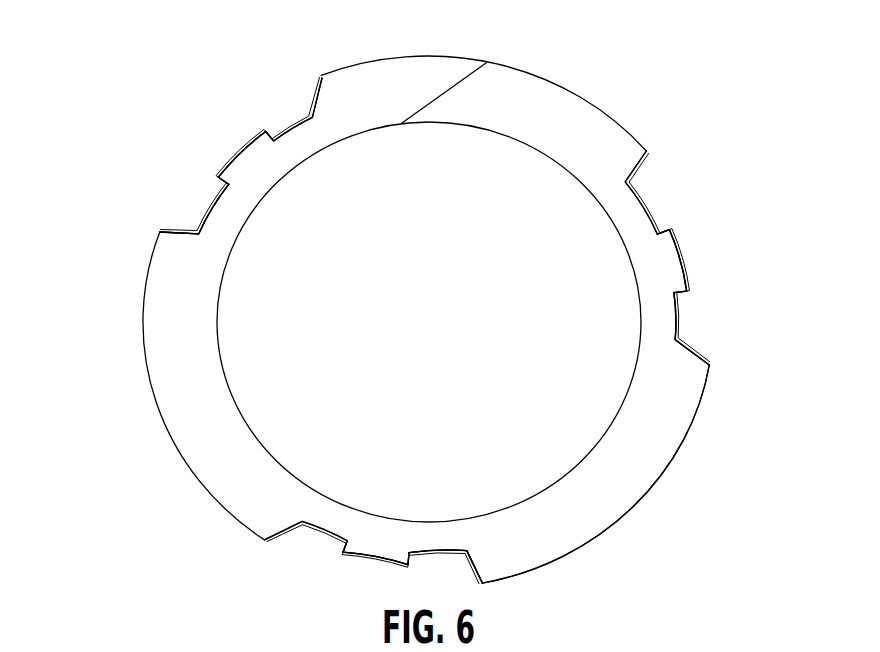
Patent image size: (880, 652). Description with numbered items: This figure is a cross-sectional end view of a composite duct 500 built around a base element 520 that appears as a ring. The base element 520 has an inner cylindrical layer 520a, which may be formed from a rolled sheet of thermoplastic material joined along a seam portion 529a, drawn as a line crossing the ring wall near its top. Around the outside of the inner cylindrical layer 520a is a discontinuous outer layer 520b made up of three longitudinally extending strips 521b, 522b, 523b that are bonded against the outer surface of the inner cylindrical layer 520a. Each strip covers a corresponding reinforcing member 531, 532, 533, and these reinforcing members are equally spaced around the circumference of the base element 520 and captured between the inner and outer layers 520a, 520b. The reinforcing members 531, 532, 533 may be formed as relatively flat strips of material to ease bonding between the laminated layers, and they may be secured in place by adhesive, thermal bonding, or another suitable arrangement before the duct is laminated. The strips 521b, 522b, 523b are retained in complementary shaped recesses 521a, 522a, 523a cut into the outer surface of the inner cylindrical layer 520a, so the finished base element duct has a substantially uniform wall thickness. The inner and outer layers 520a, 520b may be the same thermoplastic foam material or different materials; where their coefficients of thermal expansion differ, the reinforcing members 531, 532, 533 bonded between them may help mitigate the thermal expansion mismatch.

The composite duct 500 is at (140, 97).
The base element 520 is at (668, 474).
The inner cylindrical layer 520a is at (585, 212).
The discontinuous outer layer 520b is at (281, 72).
The seam portion 529a is at (496, 57).
The recess 521a is at (178, 232).
The longitudinally extending strip 521b is at (193, 203).
The reinforcing member 531 is at (248, 157).
The recess 523a is at (693, 352).
The longitudinally extending strip 523b is at (700, 315).
The reinforcing member 533 is at (670, 258).
The recess 522a is at (477, 558).
The longitudinally extending strip 522b is at (297, 550).
The reinforcing member 532 is at (372, 552).